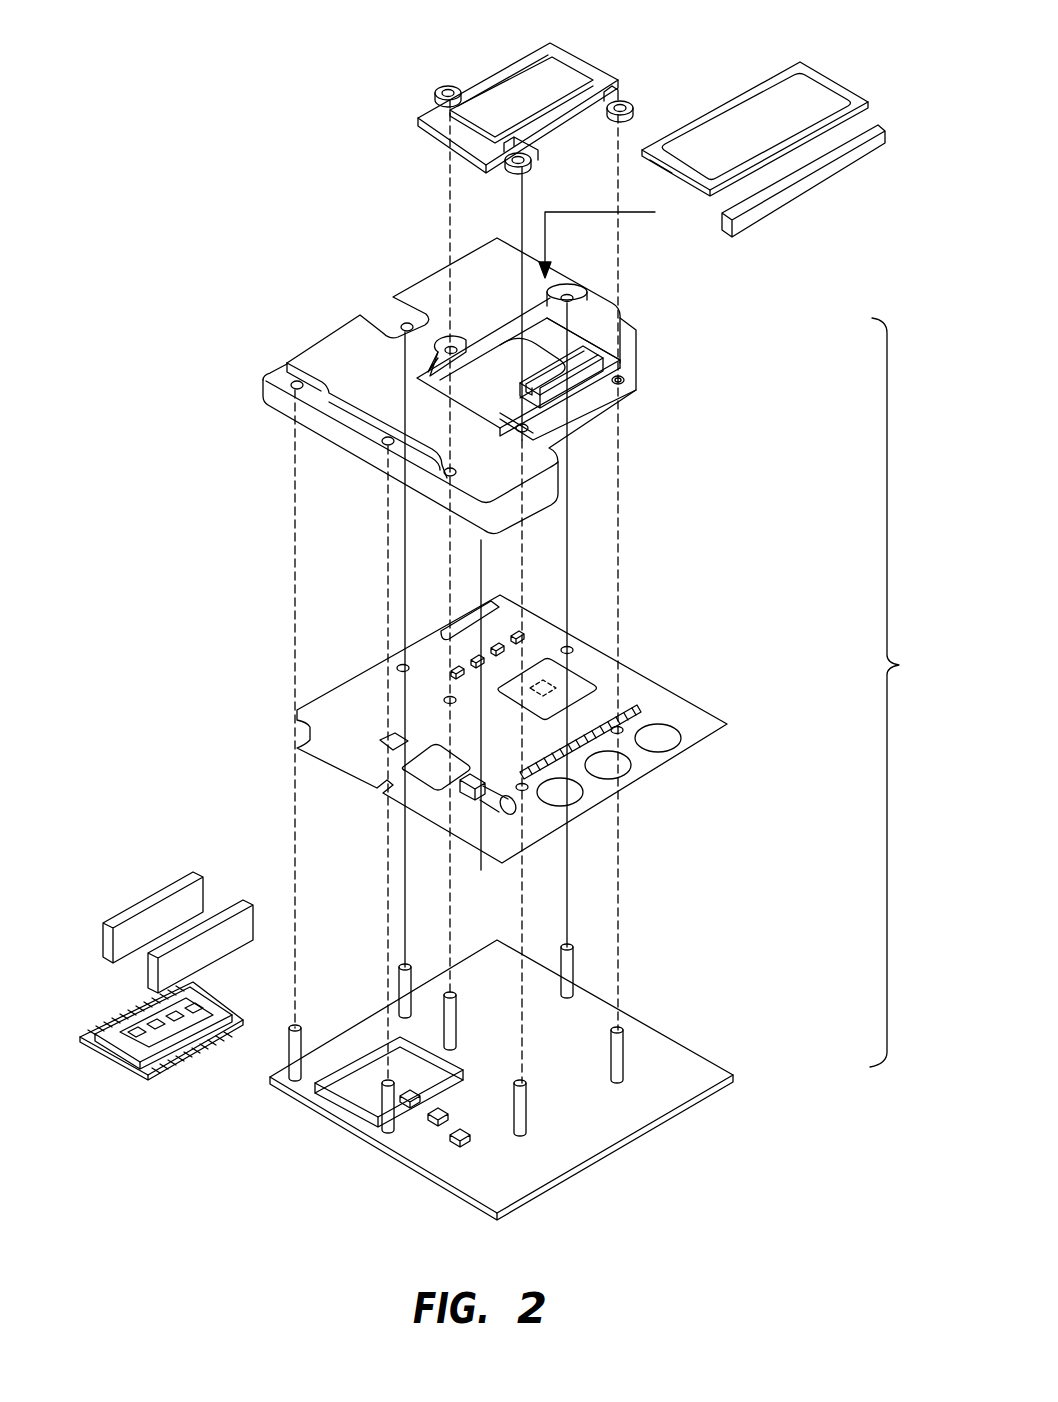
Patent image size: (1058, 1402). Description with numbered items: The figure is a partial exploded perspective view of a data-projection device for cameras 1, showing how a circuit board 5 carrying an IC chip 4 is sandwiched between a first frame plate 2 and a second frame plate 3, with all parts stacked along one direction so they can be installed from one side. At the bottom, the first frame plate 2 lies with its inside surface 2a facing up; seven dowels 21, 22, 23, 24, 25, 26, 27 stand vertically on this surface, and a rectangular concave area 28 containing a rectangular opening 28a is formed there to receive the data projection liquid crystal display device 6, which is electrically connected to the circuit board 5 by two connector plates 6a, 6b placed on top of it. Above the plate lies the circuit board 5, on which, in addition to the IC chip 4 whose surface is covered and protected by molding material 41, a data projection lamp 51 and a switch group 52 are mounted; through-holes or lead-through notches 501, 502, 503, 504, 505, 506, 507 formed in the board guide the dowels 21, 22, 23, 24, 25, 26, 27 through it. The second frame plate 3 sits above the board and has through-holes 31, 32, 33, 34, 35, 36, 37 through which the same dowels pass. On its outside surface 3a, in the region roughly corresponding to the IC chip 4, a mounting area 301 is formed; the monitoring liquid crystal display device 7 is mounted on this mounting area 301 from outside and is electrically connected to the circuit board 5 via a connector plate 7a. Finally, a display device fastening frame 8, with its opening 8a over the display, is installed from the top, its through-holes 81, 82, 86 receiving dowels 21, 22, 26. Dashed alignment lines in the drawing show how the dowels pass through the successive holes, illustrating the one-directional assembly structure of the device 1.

The data-projection device for cameras 1 is at (893, 692).
The first frame plate 2 is at (690, 1065).
The inside surface 2a is at (540, 1170).
The second frame plate 3 is at (335, 352).
The outside surface 3a is at (487, 258).
The IC chip 4 is at (597, 680).
The circuit board 5 is at (700, 728).
The data projection liquid crystal display device 6 is at (135, 1048).
The connector plate 6a is at (178, 905).
The connector plate 6b is at (222, 928).
The monitoring liquid crystal display device 7 is at (790, 80).
The connector plate 7a is at (768, 207).
The display device fastening frame 8 is at (558, 44).
The frame opening 8a is at (505, 75).
The dowel 21 is at (626, 1080).
The dowel 22 is at (527, 1118).
The dowel 23 is at (394, 1128).
The dowel 24 is at (288, 1062).
The dowel 25 is at (398, 980).
The dowel 26 is at (456, 1010).
The dowel 27 is at (574, 965).
The rectangular concave area 28 is at (335, 1090).
The rectangular opening 28a is at (372, 1102).
The through-hole 31 is at (626, 382).
The through-hole 32 is at (530, 430).
The through-hole 33 is at (384, 446).
The through-hole 34 is at (288, 384).
The through-hole 35 is at (398, 310).
The through-hole 36 is at (450, 343).
The through-hole 37 is at (590, 292).
The molding material 41 is at (577, 670).
The data projection lamp 51 is at (505, 813).
The switch group 52 is at (565, 790).
The through-hole 81 is at (625, 100).
The through-hole 82 is at (535, 168).
The through-hole 86 is at (438, 86).
The mounting area 301 is at (615, 334).
The through-hole or lead-through notch 501 is at (622, 729).
The through-hole or lead-through notch 502 is at (528, 790).
The through-hole or lead-through notch 503 is at (380, 790).
The through-hole or lead-through notch 504 is at (297, 725).
The through-hole or lead-through notch 505 is at (398, 668).
The through-hole or lead-through notch 506 is at (448, 698).
The through-hole or lead-through notch 507 is at (568, 648).